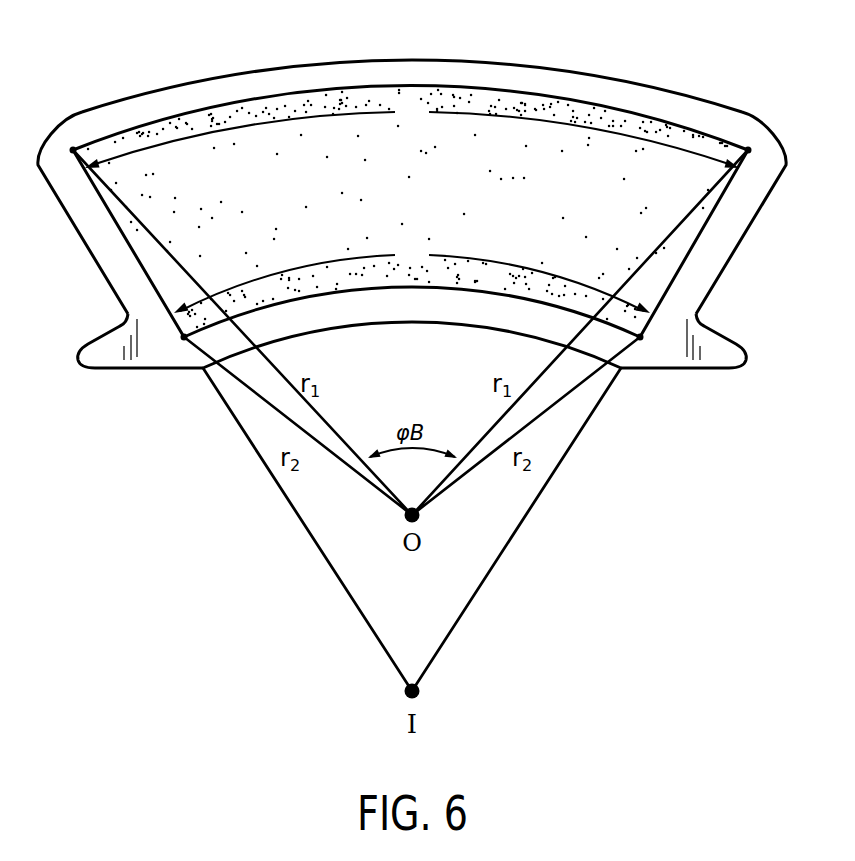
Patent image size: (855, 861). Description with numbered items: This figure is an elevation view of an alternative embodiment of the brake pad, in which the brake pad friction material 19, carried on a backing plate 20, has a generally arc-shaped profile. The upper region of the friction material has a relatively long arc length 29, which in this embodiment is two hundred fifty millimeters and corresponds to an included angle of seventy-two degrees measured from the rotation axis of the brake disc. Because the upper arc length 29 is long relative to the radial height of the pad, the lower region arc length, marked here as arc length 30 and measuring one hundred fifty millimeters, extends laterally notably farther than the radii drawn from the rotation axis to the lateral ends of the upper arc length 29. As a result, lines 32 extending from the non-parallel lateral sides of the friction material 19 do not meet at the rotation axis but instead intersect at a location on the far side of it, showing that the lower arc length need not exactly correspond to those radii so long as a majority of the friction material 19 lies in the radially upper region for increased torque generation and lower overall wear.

The brake pad friction material 19 is at (162, 118).
The backing plate 20 is at (82, 112).
The upper region arc length 29 is at (412, 131).
The inner arc length 30 is at (412, 276).
The lines 32 is at (412, 529).